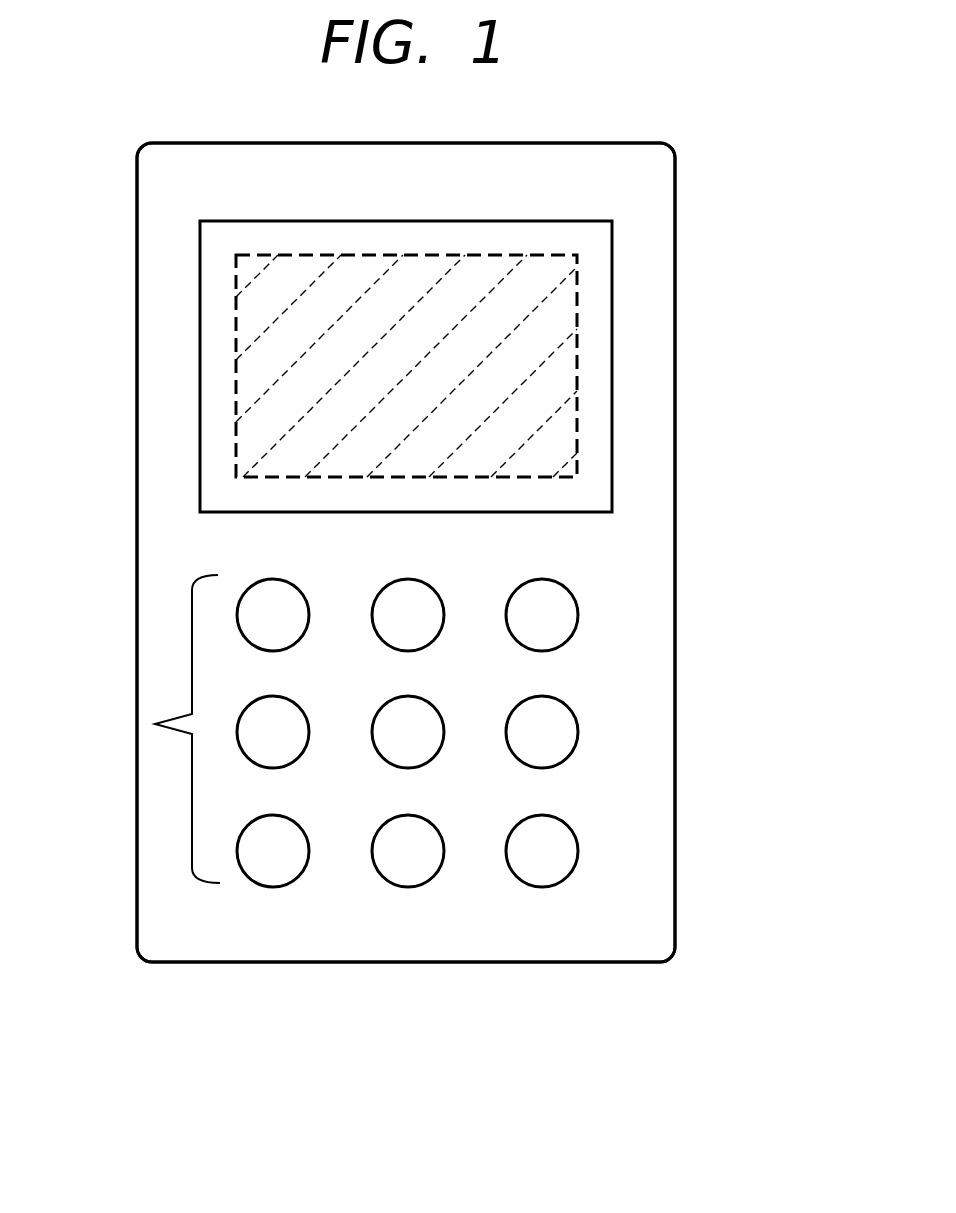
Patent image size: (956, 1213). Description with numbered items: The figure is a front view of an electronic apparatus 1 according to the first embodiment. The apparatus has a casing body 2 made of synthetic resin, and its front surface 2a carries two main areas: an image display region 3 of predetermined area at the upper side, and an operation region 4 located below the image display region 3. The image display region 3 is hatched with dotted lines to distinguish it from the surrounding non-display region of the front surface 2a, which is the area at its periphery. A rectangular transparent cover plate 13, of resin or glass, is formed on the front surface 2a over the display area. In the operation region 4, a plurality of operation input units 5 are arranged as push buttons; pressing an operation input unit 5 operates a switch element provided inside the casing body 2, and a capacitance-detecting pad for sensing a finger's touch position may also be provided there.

The electronic apparatus 1 is at (438, 605).
The casing body 2 is at (478, 552).
The front surface 2a is at (620, 543).
The image display region 3 is at (268, 393).
The operation region 4 is at (309, 821).
The operation input units 5 is at (543, 850).
The cover plate 13 is at (418, 366).